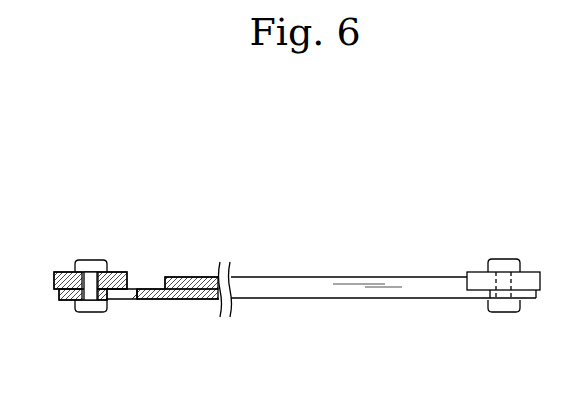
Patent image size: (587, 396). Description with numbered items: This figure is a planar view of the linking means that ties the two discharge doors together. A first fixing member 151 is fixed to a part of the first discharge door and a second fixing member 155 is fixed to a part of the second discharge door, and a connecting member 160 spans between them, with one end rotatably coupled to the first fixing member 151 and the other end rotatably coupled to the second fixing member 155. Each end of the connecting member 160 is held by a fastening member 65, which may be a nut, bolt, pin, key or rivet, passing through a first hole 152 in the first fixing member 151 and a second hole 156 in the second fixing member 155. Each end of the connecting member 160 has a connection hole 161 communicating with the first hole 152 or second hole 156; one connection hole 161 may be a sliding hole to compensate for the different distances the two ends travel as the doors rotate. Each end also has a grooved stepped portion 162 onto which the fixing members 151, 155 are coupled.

The fastening member 65 is at (92, 262).
The first fixing member 151 is at (65, 278).
The first hole 152 is at (92, 290).
The second fixing member 155 is at (532, 278).
The second hole 156 is at (527, 293).
The connecting member 160 is at (275, 299).
The connection hole 161 is at (127, 300).
The grooved stepped portion 162 is at (152, 289).